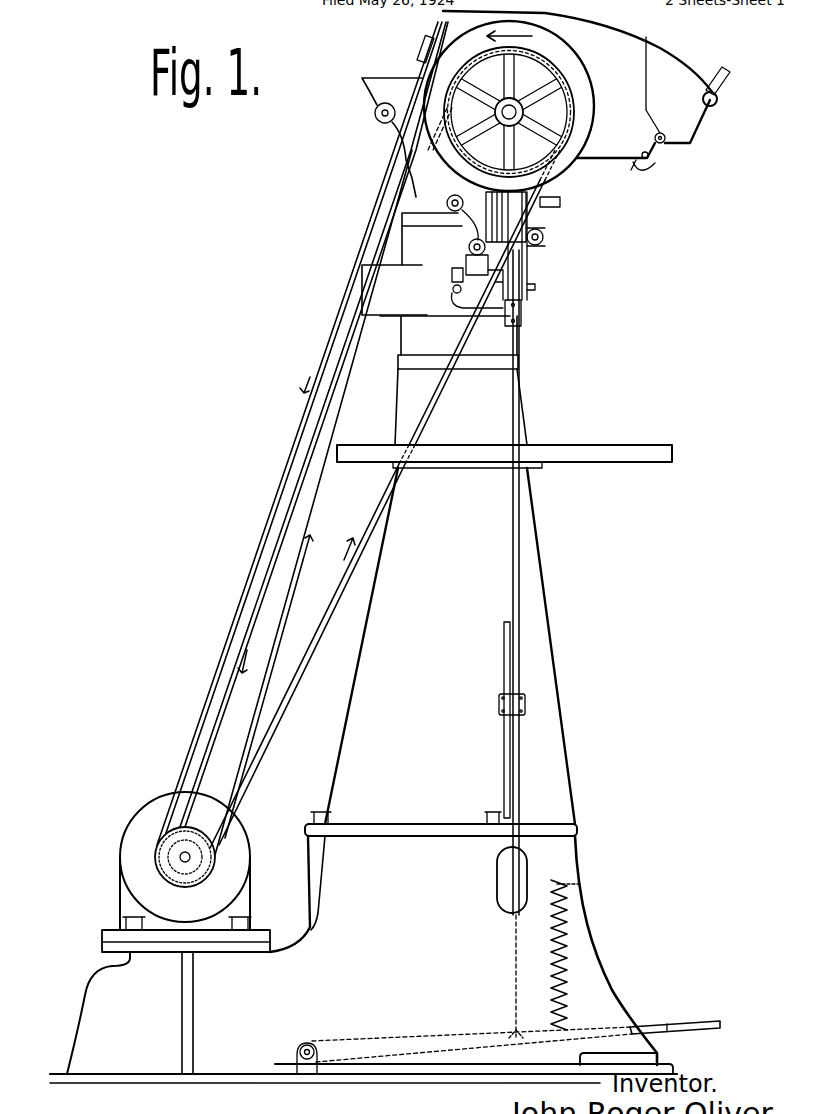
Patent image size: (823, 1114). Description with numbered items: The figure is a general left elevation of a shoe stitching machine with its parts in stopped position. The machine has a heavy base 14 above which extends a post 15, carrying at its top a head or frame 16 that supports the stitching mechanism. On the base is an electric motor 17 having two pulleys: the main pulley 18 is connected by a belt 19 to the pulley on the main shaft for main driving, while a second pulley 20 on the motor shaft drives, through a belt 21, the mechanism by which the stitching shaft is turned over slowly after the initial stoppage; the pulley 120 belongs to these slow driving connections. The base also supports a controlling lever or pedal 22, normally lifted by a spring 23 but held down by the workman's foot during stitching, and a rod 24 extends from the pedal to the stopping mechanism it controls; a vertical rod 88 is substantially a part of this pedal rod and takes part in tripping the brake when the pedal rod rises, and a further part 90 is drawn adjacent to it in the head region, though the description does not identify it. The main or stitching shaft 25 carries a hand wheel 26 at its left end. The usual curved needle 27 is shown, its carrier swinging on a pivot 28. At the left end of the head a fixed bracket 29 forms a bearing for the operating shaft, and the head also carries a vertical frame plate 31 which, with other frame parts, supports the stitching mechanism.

The base 14 is at (440, 920).
The post 15 is at (441, 652).
The head or frame 16 is at (408, 265).
The electric motor 17 is at (168, 933).
The main pulley 18 is at (190, 884).
The belt 19 is at (318, 630).
The second pulley 20 is at (165, 875).
The belt 21 is at (267, 516).
The controlling lever or pedal 22 is at (690, 1014).
The spring 23 is at (567, 976).
The rod 24 is at (521, 580).
The main or stitching shaft 25 is at (509, 105).
The hand wheel 26 is at (583, 88).
The curved needle 27 is at (650, 170).
The pivot 28 is at (643, 153).
The fixed bracket 29 is at (495, 250).
The vertical frame plate 31 is at (618, 56).
The vertical rod 88 is at (450, 212).
The pipe 90 is at (460, 309).
The pulley 120 is at (440, 24).